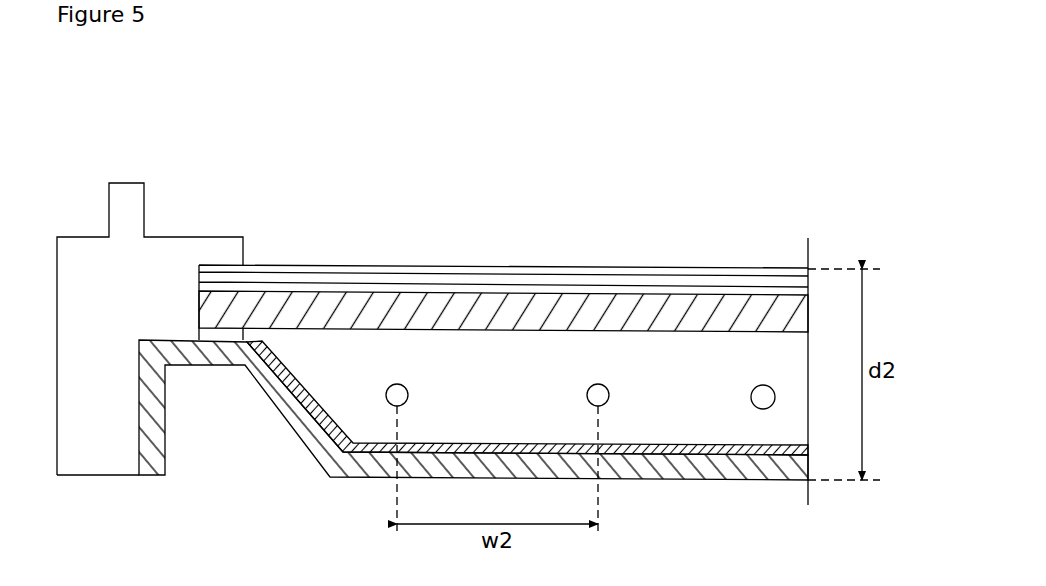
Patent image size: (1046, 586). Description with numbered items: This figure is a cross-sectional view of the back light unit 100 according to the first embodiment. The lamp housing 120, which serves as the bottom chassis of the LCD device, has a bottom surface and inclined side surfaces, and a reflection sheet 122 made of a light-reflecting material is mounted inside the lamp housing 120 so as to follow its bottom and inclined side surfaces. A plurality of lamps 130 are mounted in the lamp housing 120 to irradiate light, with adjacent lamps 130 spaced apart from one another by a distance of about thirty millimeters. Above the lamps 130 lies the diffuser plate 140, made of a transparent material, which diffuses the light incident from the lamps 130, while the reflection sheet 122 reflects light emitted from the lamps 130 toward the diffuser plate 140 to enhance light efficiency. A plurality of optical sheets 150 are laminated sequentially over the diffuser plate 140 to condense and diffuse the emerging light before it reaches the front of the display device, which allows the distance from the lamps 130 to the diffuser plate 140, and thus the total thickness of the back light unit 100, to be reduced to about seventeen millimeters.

The back light unit 100 is at (719, 141).
The lamp housing 120 is at (723, 473).
The reflection sheet 122 is at (363, 445).
The lamp 130 is at (603, 402).
The diffuser plate 140 is at (366, 307).
The optical sheets 150 is at (493, 279).